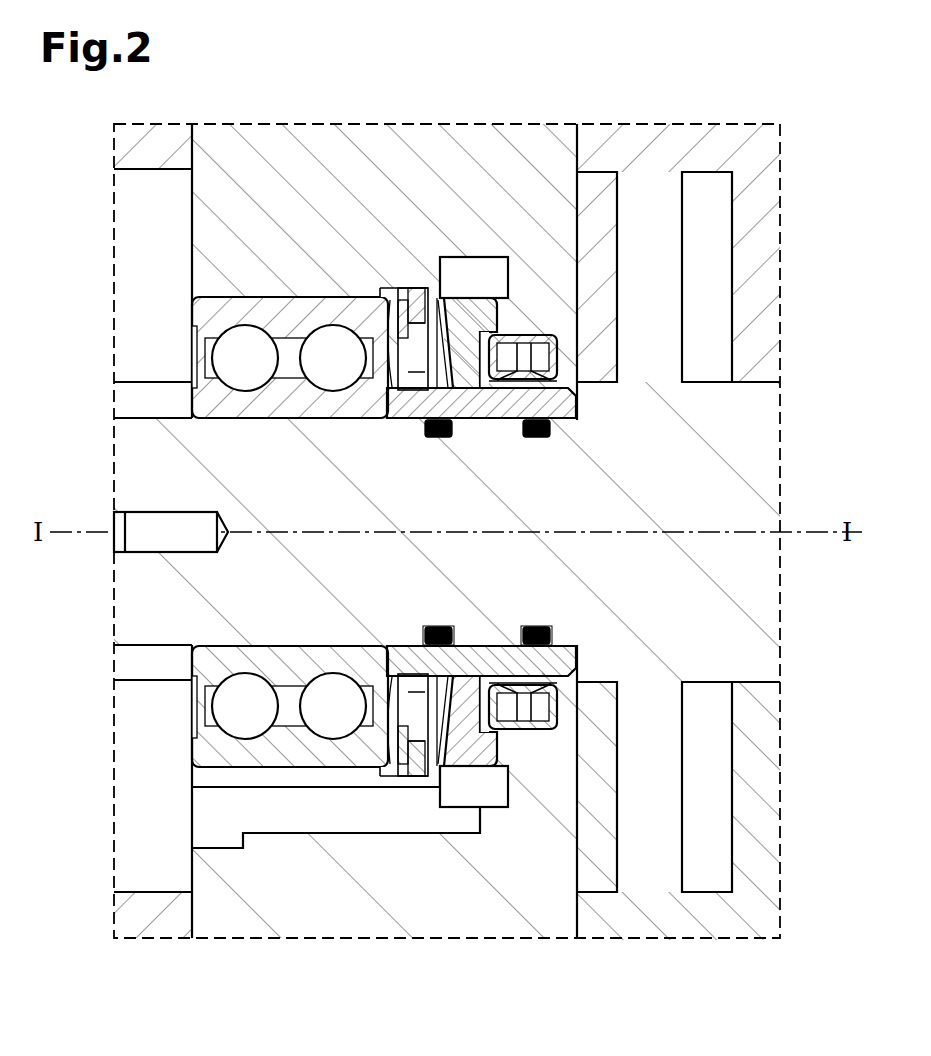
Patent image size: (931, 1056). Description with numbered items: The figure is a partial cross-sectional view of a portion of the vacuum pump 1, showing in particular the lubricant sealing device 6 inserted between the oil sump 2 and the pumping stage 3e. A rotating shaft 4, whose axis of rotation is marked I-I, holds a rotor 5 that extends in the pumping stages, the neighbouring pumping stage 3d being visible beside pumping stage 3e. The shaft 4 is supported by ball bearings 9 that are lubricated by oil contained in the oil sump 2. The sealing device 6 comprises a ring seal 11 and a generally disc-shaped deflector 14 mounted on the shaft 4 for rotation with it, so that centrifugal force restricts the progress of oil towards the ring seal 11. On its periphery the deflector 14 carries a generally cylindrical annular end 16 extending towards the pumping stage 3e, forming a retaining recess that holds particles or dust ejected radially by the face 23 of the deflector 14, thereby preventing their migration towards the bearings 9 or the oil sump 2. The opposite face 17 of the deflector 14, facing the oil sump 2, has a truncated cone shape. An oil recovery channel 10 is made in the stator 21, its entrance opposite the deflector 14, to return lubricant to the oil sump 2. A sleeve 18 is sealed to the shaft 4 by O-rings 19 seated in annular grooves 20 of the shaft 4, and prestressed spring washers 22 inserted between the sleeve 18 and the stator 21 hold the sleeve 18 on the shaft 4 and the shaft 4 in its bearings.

The vacuum pump 1 is at (76, 164).
The oil sump 2 is at (140, 912).
The pumping stage 3d is at (713, 150).
The pumping stage 3e is at (598, 150).
The rotating shaft 4 is at (755, 465).
The rotor 5 is at (708, 268).
The lubricant sealing device 6 is at (384, 192).
The ball bearings 9 is at (207, 310).
The oil recovery channel 10 is at (345, 810).
The ring seal 11 is at (530, 336).
The deflector 14 is at (462, 735).
The annular end 16 is at (480, 310).
The face of the deflector 17 is at (447, 368).
The sleeve 18 is at (563, 405).
The O-ring 19 is at (420, 636).
The annular groove 20 is at (435, 627).
The stator 21 is at (275, 165).
The prestressed spring washer 22 is at (413, 297).
The face of the deflector 23 is at (483, 375).